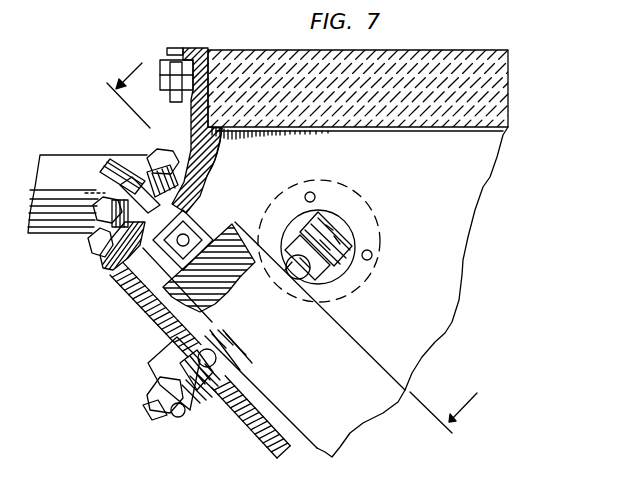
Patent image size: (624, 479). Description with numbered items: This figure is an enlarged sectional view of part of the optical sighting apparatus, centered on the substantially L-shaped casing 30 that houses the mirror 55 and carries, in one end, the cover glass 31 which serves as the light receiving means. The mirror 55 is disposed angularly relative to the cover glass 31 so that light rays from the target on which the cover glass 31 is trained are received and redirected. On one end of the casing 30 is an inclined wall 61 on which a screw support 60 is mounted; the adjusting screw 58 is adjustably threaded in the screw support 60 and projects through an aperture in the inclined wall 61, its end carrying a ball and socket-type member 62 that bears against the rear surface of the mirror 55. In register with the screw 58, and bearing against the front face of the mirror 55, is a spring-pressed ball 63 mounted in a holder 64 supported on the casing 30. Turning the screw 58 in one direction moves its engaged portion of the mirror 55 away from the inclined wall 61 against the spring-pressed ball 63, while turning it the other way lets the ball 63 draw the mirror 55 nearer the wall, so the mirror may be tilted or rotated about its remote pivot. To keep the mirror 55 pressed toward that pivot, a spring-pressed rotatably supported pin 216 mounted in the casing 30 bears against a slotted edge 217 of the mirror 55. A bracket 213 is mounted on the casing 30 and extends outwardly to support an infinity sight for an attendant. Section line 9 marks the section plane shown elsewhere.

The section line 9- 9 is at (292, 239).
The L-shaped casing 30 is at (196, 118).
The cover glass 31 is at (244, 53).
The mirror 55 is at (365, 362).
The screw 58 is at (150, 400).
The screw support 60 is at (162, 357).
The inclined wall 61 is at (120, 303).
The ball and socket-type member 62 is at (223, 400).
The spring-pressed ball 63 is at (322, 290).
The holder 64 is at (362, 230).
The bracket 213 is at (93, 137).
The spring-pressed rotatably supported pin 216 is at (207, 187).
The slotted edge 217 is at (220, 232).